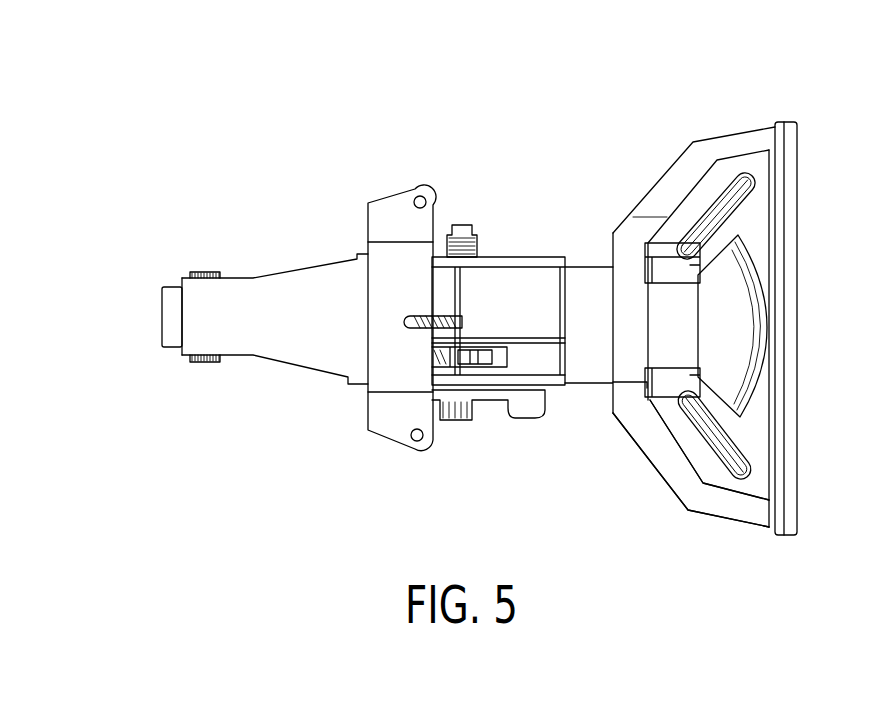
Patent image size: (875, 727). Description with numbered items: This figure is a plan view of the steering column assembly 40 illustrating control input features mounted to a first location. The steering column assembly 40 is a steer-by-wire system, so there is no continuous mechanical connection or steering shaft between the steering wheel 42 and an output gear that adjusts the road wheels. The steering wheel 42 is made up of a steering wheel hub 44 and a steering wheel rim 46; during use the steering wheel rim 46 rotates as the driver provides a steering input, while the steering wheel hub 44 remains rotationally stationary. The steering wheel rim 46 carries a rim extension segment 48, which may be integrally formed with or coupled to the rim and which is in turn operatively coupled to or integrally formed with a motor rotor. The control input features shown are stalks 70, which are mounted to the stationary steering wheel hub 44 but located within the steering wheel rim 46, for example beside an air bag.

The steering column assembly 40 is at (396, 168).
The steering wheel 42 is at (738, 114).
The steering wheel hub 44 is at (660, 282).
The steering wheel rim 46 is at (792, 143).
The rim extension segment 48 is at (672, 463).
The stalks 70 is at (718, 207).